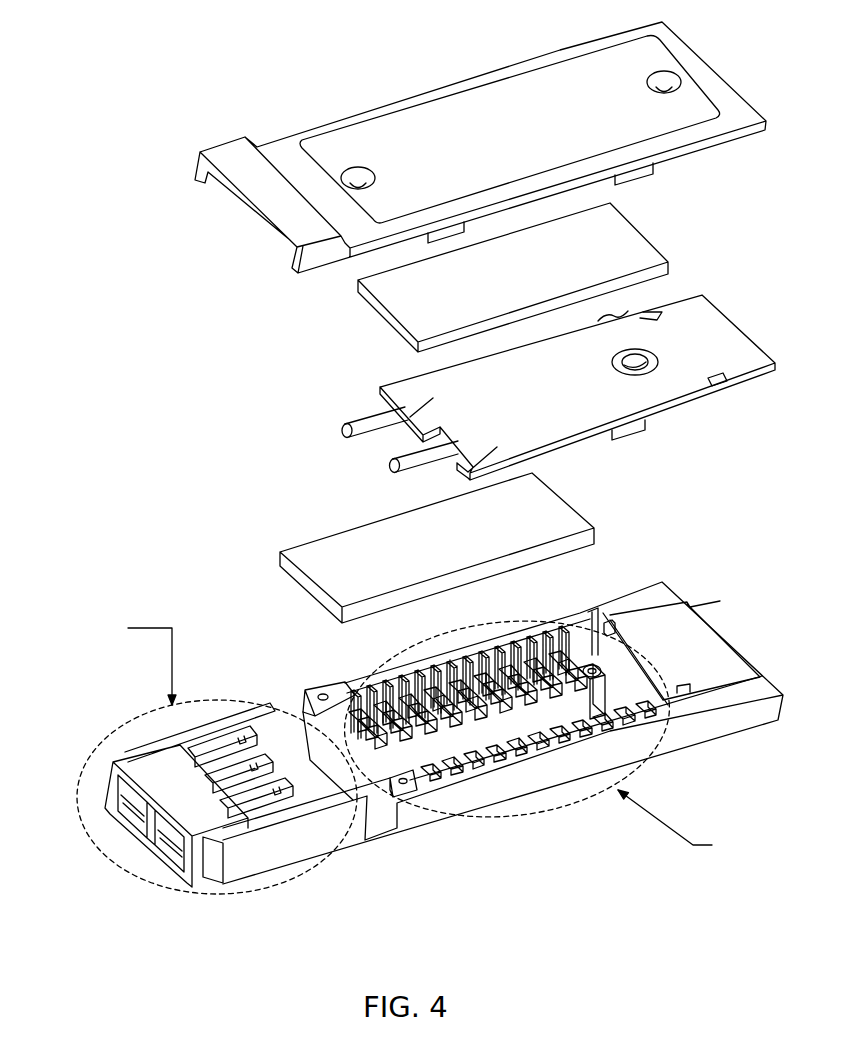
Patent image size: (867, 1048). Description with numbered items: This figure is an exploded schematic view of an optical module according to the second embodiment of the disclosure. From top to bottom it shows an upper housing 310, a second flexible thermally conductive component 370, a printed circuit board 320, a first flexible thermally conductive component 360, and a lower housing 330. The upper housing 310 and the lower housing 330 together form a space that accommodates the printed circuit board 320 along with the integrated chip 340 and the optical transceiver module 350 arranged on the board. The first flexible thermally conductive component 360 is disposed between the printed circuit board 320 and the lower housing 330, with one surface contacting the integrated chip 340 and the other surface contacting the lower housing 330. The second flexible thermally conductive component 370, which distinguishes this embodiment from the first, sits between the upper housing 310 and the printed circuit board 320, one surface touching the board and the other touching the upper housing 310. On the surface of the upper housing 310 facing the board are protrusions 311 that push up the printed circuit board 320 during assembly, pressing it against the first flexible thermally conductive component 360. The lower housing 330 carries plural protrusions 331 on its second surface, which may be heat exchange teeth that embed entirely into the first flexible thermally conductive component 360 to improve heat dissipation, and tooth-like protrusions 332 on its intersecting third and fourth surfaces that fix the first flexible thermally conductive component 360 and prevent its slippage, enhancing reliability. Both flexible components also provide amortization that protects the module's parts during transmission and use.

The upper housing 310 is at (665, 72).
The protrusions 311 is at (650, 172).
The second flexible thermally conductive component 370 is at (635, 258).
The printed circuit board 320 is at (715, 348).
The integrated chip 340 is at (642, 438).
The optical transceiver module 350 is at (335, 430).
The first flexible thermally conductive component 360 is at (543, 527).
The lower housing 330 is at (690, 653).
The tooth-like protrusions 332 is at (358, 683).
The protrusions 331 is at (448, 765).